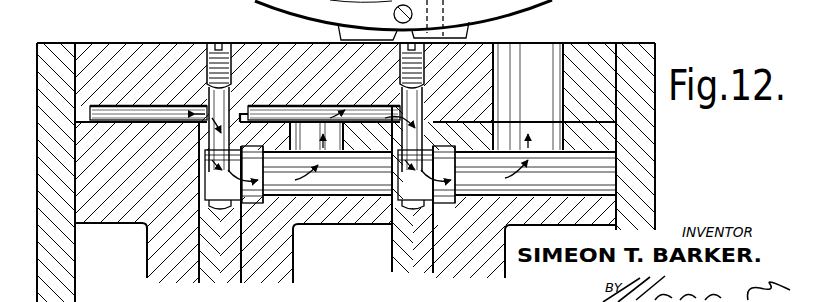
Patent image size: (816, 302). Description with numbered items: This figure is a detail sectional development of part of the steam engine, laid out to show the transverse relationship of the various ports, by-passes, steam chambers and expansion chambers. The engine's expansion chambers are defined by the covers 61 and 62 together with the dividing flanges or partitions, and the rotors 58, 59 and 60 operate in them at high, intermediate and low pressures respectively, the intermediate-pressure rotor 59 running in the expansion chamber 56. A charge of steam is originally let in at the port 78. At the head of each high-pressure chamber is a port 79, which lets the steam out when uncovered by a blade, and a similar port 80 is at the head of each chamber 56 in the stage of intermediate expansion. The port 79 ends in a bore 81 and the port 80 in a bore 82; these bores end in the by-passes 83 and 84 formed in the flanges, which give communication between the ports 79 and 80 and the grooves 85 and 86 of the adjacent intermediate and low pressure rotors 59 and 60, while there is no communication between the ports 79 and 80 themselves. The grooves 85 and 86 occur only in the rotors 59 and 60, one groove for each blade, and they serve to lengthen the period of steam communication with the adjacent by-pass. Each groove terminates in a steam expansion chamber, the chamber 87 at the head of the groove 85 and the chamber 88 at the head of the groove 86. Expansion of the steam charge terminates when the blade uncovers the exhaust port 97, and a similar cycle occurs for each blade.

The expansion chamber 56 is at (219, 46).
The rotor 58 is at (150, 259).
The rotor 59 is at (291, 259).
The rotor 60 is at (500, 233).
The cover 61 is at (40, 204).
The cover 62 is at (650, 183).
The port 78 is at (470, 32).
The port 79 is at (88, 110).
The port 80 is at (273, 108).
The bore 81 is at (200, 95).
The bore 82 is at (426, 112).
The by-pass 83 is at (223, 179).
The by-pass 84 is at (415, 179).
The groove 85 is at (245, 174).
The groove 86 is at (439, 174).
The steam expansion chamber 87 is at (305, 152).
The steam expansion chamber 88 is at (535, 173).
The exhaust port 97 is at (528, 96).